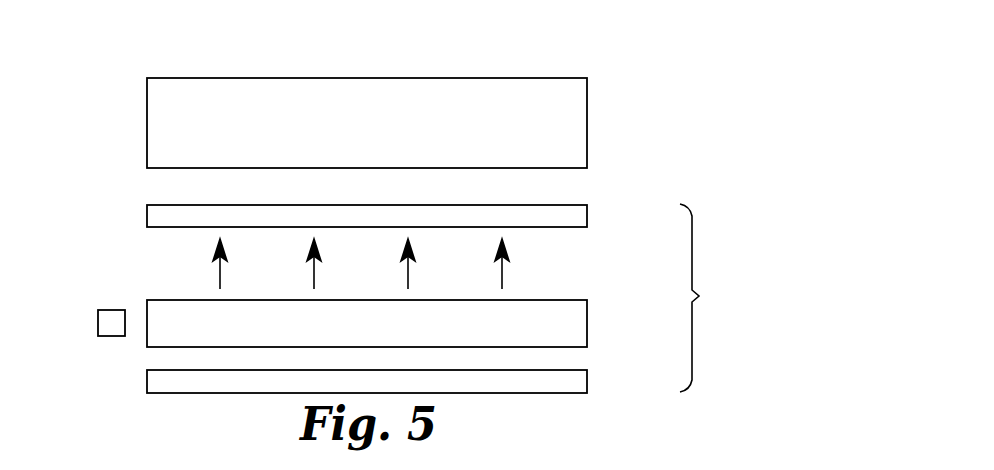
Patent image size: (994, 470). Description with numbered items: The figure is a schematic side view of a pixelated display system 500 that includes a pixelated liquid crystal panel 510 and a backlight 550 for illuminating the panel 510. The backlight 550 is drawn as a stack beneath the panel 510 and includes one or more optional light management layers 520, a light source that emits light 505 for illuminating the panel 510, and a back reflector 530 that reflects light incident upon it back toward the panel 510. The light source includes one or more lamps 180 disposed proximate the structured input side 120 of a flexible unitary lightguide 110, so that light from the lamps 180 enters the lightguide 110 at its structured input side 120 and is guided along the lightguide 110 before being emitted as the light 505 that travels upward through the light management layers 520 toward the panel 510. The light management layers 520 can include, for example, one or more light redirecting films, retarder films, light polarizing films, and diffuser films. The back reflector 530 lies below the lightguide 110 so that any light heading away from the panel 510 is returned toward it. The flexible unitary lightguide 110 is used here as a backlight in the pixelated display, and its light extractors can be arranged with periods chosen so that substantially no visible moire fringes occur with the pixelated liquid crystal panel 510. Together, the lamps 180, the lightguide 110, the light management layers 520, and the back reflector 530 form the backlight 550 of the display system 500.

The pixelated display system 500 is at (572, 46).
The pixelated liquid crystal panel 510 is at (578, 117).
The light management layer 520 is at (580, 218).
The light 505 is at (218, 276).
The flexible unitary lightguide 110 is at (575, 327).
The back reflector 530 is at (580, 383).
The lamp 180 is at (110, 317).
The structured input side 120 is at (146, 335).
The backlight 550 is at (713, 298).